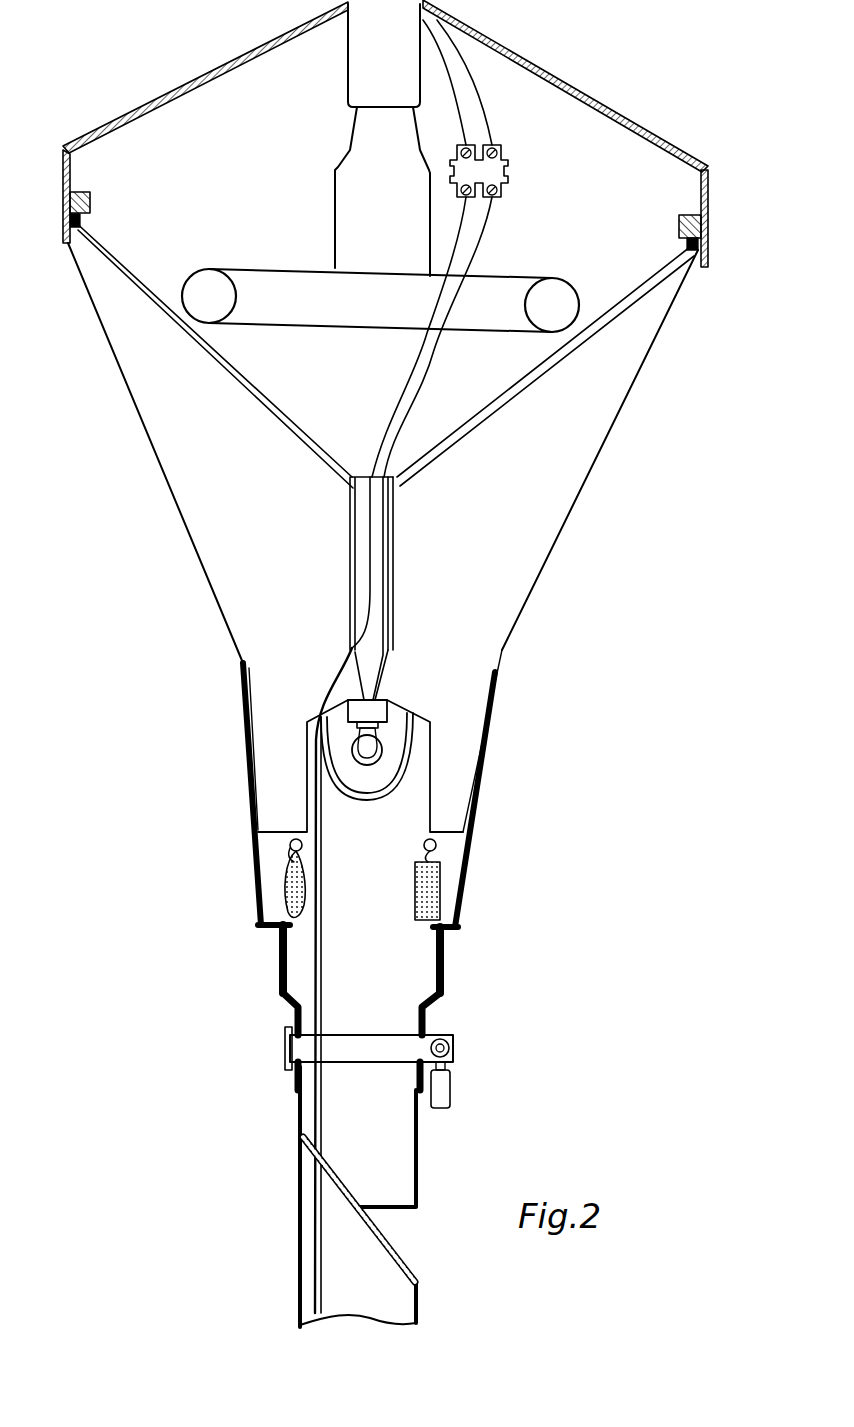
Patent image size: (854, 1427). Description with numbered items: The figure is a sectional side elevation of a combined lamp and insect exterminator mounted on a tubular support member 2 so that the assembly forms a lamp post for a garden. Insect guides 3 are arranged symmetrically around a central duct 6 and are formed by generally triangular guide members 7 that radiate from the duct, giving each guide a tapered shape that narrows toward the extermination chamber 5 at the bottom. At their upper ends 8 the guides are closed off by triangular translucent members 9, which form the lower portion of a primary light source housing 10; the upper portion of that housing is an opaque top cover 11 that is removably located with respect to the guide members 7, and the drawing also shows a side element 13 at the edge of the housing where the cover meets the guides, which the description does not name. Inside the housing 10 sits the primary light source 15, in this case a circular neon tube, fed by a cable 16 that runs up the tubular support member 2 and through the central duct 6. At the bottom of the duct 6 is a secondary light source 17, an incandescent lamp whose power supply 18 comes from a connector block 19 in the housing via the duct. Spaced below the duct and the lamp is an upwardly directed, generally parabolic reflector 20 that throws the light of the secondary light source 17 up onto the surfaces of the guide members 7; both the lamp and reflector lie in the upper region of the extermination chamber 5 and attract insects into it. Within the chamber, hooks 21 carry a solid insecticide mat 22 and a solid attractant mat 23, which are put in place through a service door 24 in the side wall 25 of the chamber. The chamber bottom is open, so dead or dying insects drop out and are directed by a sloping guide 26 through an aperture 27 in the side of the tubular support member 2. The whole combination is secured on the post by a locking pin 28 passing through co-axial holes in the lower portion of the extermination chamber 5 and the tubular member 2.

The tubular support member 2 is at (295, 1253).
The insect guides 3 is at (577, 465).
The extermination chamber 5 is at (480, 795).
The central duct 6 is at (390, 620).
The guide members 7 is at (627, 395).
The upper ends 8 is at (660, 287).
The triangular translucent members 9 is at (467, 417).
The primary light source housing 10 is at (380, 273).
The top cover 11 is at (578, 98).
The side wall 13 is at (707, 208).
The primary light source 15 is at (287, 228).
The cable 16 is at (318, 1198).
The secondary light source 17 is at (382, 740).
The power supply 18 is at (367, 548).
The connector block 19 is at (497, 160).
The reflector 20 is at (343, 783).
The hooks 21 is at (420, 830).
The solid insecticide mat 22 is at (420, 913).
The solid attractant mat 23 is at (300, 907).
The service door 24 is at (253, 867).
The side wall 25 is at (467, 857).
The sloping guide 26 is at (343, 1187).
The aperture 27 is at (410, 1220).
The locking pin 28 is at (303, 1050).